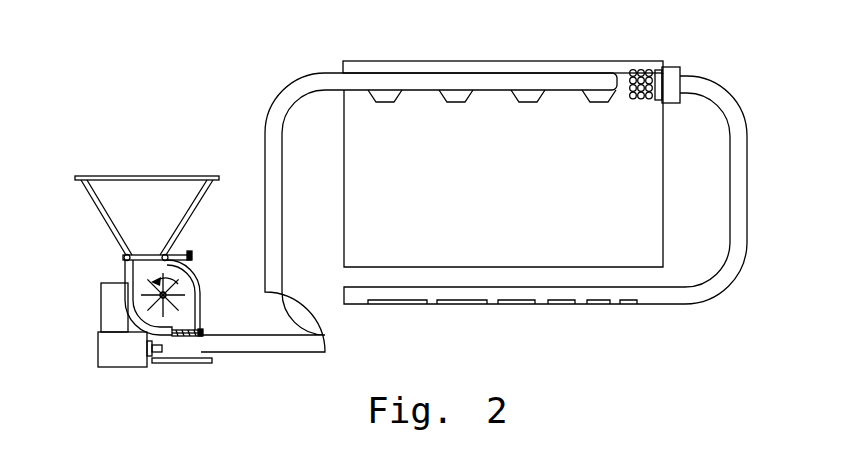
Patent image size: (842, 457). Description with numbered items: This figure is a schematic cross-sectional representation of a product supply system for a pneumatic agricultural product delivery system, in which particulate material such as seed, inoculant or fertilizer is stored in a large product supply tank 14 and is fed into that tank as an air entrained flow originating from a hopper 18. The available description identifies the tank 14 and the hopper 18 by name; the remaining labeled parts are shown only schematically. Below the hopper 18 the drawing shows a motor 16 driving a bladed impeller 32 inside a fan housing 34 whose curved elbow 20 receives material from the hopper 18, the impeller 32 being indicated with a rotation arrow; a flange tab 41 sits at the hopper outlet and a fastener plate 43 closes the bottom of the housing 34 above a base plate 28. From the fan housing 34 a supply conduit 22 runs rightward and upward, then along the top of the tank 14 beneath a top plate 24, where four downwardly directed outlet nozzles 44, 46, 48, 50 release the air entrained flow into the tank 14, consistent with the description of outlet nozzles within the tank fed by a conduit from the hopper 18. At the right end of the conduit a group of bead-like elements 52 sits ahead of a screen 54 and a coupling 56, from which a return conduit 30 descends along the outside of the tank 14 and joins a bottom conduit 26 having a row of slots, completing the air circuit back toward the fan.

The product supply tank 14 is at (664, 218).
The motor 16 is at (100, 312).
The hopper 18 is at (112, 176).
The curved duct / elbow 20 is at (196, 278).
The supply conduit 22 is at (262, 155).
The top plate 24 is at (342, 66).
The bottom return conduit 26 is at (492, 304).
The base plate 28 is at (182, 350).
The return conduit 30 is at (746, 236).
The impeller / fan 32 is at (142, 283).
The fan housing 34 is at (184, 303).
The flange tab 41 is at (192, 253).
The fastener / mounting plate 43 is at (201, 333).
The first nozzle 44 is at (378, 102).
The second nozzle 46 is at (448, 102).
The third nozzle 48 is at (520, 102).
The fourth nozzle 50 is at (591, 102).
The filter media beads 52 is at (638, 100).
The screen 54 is at (659, 68).
The coupling 56 is at (676, 67).